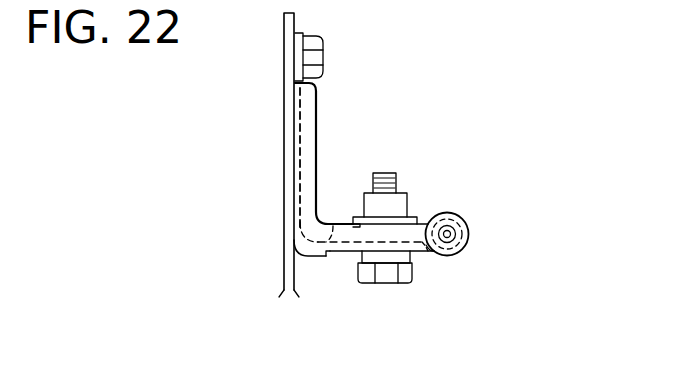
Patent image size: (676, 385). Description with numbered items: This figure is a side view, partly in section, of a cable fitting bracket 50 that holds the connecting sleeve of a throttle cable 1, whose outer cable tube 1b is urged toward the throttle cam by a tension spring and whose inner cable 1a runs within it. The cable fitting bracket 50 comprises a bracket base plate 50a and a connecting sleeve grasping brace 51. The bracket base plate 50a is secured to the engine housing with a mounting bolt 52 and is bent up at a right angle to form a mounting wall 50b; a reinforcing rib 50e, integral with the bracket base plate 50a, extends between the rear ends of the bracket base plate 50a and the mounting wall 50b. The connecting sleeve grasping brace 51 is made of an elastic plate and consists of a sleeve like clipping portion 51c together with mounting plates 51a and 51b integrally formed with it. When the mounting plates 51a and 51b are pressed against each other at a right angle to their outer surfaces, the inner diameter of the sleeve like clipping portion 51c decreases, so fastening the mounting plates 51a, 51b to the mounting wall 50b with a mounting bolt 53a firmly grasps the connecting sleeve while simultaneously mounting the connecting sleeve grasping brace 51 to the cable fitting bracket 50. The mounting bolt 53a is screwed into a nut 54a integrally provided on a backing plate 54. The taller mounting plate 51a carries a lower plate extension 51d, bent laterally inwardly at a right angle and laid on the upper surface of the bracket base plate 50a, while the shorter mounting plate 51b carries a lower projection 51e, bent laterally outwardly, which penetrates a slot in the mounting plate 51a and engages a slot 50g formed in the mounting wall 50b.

The shaft 1 is at (470, 229).
The shaft center 1a is at (467, 245).
The outer cable tube 1b is at (473, 222).
The cable fitting bracket 50 is at (280, 80).
The bracket base plate 50a is at (298, 129).
The mounting wall 50b is at (423, 253).
The reinforcing rib 50e is at (320, 94).
The slot 50g is at (338, 260).
The connecting sleeve grasping brace 51 is at (462, 211).
The mounting plate 51a is at (391, 285).
The mounting plate 51b is at (360, 226).
The sleeve like clipping portion 51c is at (460, 248).
The lower plate extension 51d is at (297, 228).
The lower projection 51e is at (300, 257).
The mounting bolt 52 is at (324, 55).
The mounting bolt 53a is at (413, 256).
The backing plate 54 is at (418, 216).
The nut 54a is at (398, 205).